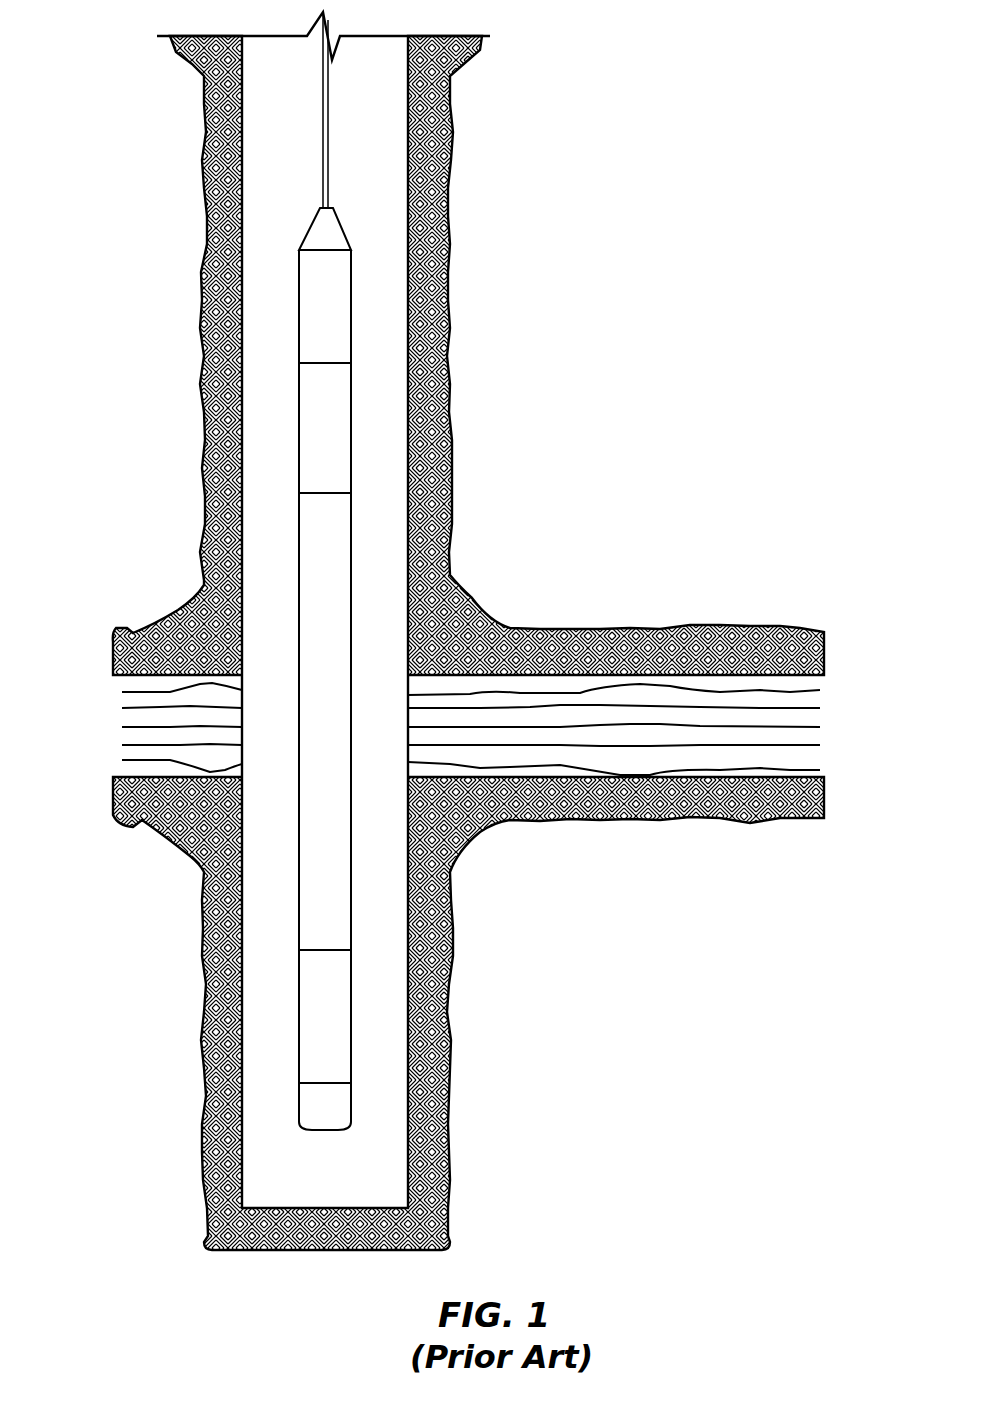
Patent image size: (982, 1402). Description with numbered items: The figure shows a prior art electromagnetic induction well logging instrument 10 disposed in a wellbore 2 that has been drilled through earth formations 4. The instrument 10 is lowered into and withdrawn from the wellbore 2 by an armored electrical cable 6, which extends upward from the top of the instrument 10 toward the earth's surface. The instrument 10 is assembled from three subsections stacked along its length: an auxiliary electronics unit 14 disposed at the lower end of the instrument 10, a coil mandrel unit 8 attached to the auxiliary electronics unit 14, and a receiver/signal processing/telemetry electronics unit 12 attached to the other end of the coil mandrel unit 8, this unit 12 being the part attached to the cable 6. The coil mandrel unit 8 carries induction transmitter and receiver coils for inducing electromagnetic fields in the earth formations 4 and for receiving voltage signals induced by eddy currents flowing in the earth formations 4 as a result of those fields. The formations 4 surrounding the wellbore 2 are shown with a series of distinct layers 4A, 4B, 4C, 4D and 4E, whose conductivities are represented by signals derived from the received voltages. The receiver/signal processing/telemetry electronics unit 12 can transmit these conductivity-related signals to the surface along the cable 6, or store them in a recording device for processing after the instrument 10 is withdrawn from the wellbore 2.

The wellbore 2 is at (270, 124).
The earth formations 4 is at (469, 722).
The layer of the earth formations 4A is at (812, 683).
The layer of the earth formations 4B is at (812, 703).
The layer of the earth formations 4C is at (812, 735).
The layer of the earth formations 4D is at (812, 752).
The layer of the earth formations 4E is at (812, 767).
The armored electrical cable 6 is at (328, 160).
The coil mandrel unit 8 is at (333, 655).
The electromagnetic induction well logging instrument 10 is at (422, 572).
The receiver/signal processing/telemetry electronics unit 12 is at (333, 425).
The auxiliary electronics unit 14 is at (335, 1018).